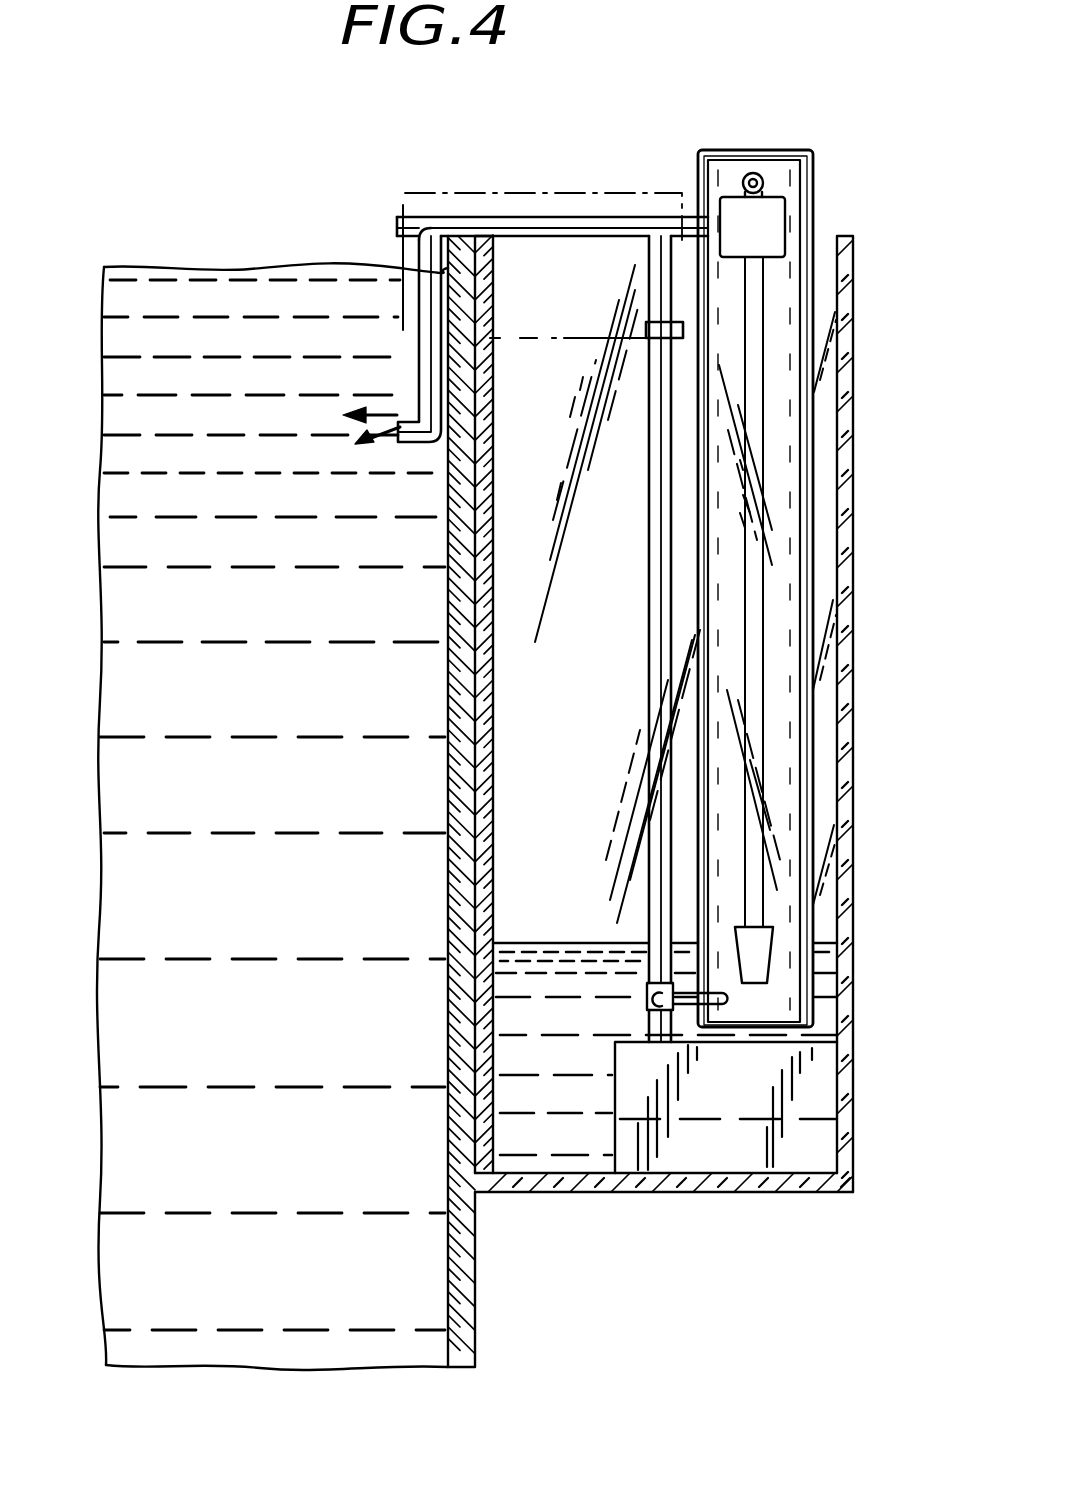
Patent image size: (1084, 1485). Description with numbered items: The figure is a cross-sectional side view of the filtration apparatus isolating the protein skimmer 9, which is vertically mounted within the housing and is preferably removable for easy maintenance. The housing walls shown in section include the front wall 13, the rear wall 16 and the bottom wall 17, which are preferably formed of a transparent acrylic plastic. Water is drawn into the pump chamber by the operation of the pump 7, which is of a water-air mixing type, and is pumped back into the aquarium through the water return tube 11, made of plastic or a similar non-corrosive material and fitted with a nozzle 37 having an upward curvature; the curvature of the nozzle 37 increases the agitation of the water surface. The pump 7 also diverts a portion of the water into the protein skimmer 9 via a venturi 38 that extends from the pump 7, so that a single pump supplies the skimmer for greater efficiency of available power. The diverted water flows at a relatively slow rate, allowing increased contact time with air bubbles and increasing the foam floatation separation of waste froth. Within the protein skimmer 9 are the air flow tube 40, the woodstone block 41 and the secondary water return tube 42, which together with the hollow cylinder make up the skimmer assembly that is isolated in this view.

The pump 7 is at (827, 1088).
The protein skimmer 9 is at (790, 247).
The water return tube 11 is at (430, 311).
The front wall 13 is at (447, 788).
The rear wall 16 is at (890, 631).
The bottom wall 17 is at (560, 1185).
The nozzle 37 is at (400, 400).
The venturi 38 is at (658, 1010).
The air flow tube 40 is at (753, 464).
The woodstone block 41 is at (760, 962).
The secondary water return tube 42 is at (673, 217).